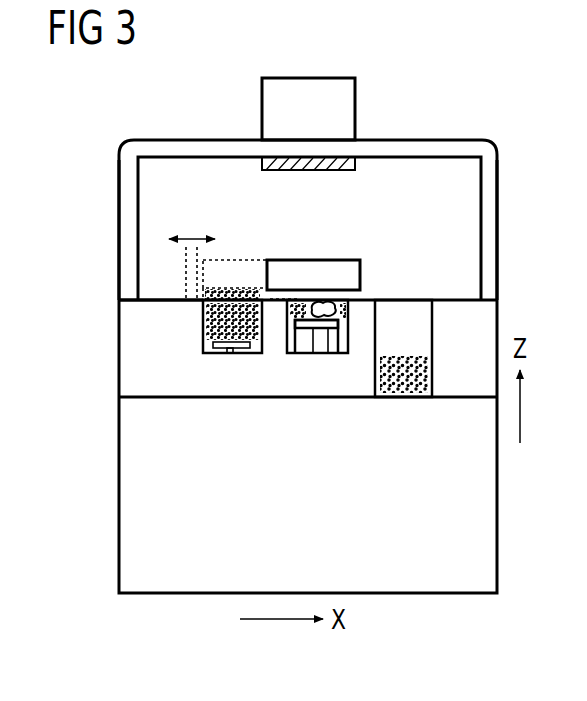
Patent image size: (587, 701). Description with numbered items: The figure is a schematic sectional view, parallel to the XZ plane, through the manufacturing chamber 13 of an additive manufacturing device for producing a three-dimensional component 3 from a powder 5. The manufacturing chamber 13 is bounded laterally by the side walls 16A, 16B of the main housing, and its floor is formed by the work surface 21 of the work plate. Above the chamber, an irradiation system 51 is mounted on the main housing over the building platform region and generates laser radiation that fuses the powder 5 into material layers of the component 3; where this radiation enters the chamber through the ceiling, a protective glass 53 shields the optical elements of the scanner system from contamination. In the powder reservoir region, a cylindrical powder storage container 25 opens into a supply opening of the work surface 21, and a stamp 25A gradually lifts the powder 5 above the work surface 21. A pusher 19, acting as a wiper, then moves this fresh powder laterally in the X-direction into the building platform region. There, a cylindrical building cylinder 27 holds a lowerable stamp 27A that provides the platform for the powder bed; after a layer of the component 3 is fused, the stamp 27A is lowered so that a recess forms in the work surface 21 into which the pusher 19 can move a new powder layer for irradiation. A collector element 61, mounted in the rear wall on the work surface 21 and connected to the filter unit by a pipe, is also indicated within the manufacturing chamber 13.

The 3D component 3 is at (332, 308).
The powder 5 is at (213, 320).
The manufacturing chamber 13 is at (453, 248).
The side wall 16A is at (119, 178).
The side wall 16B is at (497, 188).
The pusher 19 is at (185, 275).
The work surface 21 is at (168, 300).
The powder storage container 25 is at (203, 348).
The stamp 25A is at (213, 350).
The building cylinder 27 is at (345, 335).
The lowerable stamp 27A is at (327, 350).
The irradiation system 51 is at (345, 105).
The protective glass 53 is at (353, 165).
The collector element 61 is at (305, 258).